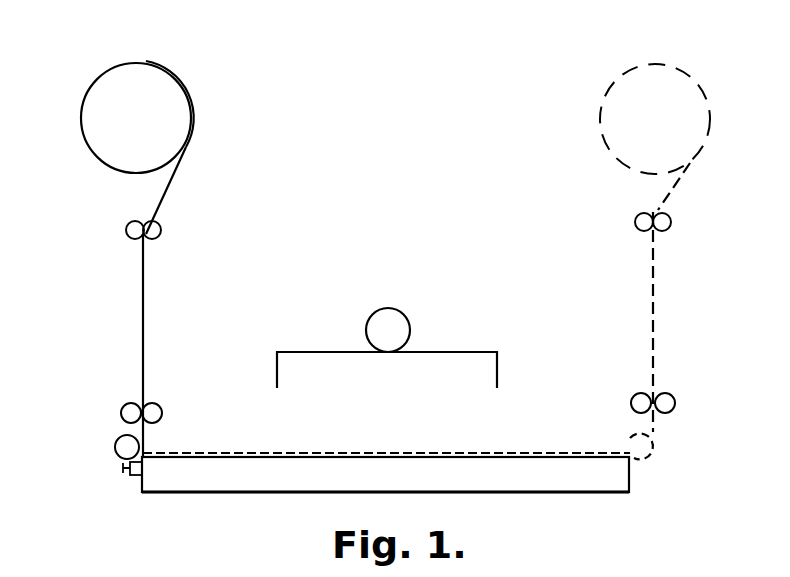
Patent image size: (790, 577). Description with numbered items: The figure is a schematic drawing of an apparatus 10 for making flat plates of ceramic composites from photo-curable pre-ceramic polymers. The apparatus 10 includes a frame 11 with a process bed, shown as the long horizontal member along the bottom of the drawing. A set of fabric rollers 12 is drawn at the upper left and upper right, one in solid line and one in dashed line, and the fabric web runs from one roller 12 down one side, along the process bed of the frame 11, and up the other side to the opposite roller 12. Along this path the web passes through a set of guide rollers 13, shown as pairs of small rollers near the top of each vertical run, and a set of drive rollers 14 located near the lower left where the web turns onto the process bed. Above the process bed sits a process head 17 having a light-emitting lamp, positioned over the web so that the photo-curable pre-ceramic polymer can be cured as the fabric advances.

The apparatus 10 is at (419, 167).
The frame 11 is at (215, 482).
The set of fabric rollers 12 is at (157, 87).
The set of guide rollers 13 is at (127, 230).
The set of drive rollers 14 is at (117, 442).
The process head 17 is at (465, 368).